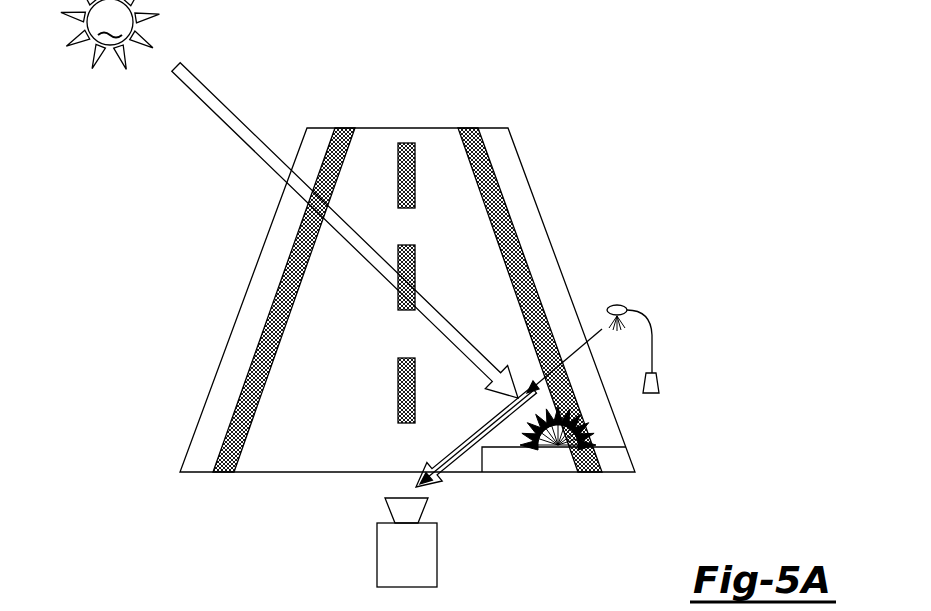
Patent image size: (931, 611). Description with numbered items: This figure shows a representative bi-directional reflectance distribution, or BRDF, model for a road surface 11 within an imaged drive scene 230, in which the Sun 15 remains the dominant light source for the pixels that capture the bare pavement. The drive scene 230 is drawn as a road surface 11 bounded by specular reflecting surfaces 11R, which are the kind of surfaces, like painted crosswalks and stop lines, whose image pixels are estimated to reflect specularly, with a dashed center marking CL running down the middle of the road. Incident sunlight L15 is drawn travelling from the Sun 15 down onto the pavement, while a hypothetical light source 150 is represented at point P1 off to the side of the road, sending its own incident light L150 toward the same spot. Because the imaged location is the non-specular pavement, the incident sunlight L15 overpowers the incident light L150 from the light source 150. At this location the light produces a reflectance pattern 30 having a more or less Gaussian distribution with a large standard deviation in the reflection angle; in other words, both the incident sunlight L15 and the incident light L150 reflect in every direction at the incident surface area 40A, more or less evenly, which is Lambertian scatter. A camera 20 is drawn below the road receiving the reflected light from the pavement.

The Sun 15 is at (110, 34).
The imaged drive scene 230 is at (537, 88).
The center line CL is at (401, 120).
The specular reflecting surfaces 11R is at (407, 162).
The road surface 11 is at (298, 433).
The incident surface area 40A is at (525, 457).
The incident sunlight L15 is at (228, 117).
The reflectance pattern 30 is at (620, 417).
The incident light L150 is at (600, 328).
The hypothetical light source 150 is at (697, 315).
The point P1 is at (692, 361).
The camera 20 is at (437, 553).